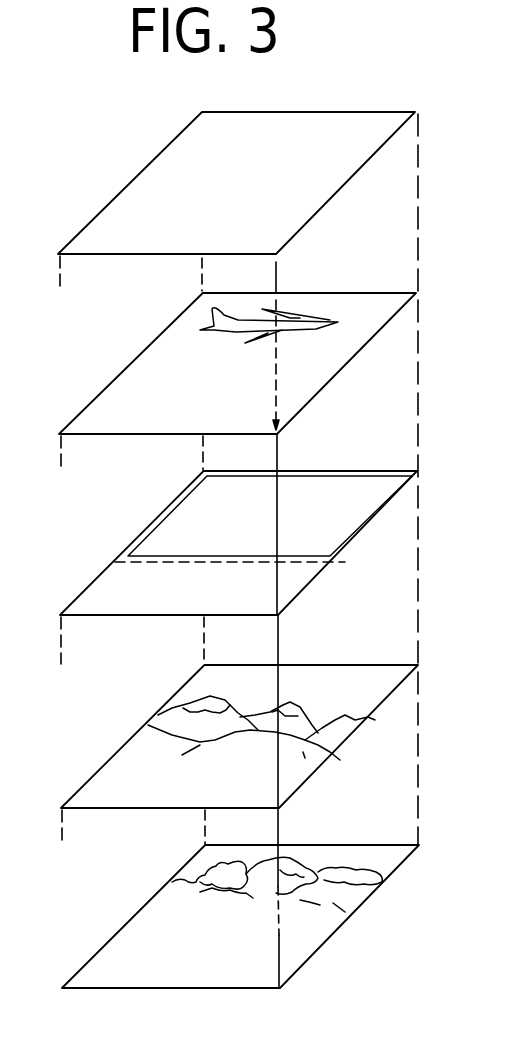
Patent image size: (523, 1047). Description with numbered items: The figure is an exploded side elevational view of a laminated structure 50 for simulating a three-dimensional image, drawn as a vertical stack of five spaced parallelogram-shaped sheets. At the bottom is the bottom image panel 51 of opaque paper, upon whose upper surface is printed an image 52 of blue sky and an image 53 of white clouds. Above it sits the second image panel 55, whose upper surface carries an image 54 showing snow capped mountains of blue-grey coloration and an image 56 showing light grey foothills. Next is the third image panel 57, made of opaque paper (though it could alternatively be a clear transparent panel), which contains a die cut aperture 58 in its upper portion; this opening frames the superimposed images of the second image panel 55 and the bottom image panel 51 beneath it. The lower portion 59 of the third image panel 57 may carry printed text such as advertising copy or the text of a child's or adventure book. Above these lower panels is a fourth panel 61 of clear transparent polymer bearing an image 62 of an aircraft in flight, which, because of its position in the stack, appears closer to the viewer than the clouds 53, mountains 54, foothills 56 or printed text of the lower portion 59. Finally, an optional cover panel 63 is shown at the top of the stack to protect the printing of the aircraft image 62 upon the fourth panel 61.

The laminated structure 50 is at (117, 164).
The bottom image panel 51 is at (135, 990).
The image of blue sky 52 is at (370, 880).
The image of white clouds 53 is at (338, 904).
The image of snow capped mountains 54 is at (333, 738).
The second image panel 55 is at (122, 810).
The image of foothills 56 is at (302, 762).
The third image panel 57 is at (140, 617).
The die cut aperture 58 is at (338, 508).
The lower portion 59 is at (287, 575).
The fourth panel 61 is at (145, 437).
The image of an aircraft 62 is at (314, 332).
The cover panel 63 is at (143, 256).